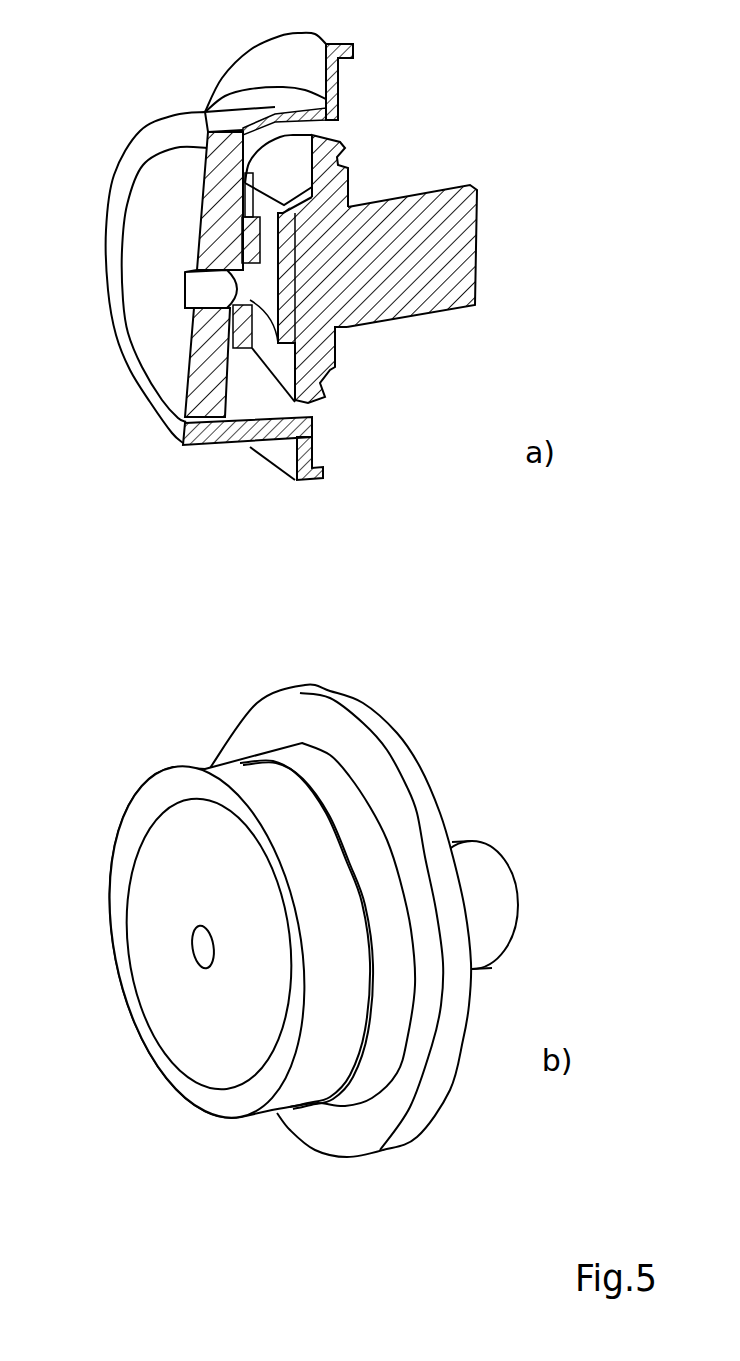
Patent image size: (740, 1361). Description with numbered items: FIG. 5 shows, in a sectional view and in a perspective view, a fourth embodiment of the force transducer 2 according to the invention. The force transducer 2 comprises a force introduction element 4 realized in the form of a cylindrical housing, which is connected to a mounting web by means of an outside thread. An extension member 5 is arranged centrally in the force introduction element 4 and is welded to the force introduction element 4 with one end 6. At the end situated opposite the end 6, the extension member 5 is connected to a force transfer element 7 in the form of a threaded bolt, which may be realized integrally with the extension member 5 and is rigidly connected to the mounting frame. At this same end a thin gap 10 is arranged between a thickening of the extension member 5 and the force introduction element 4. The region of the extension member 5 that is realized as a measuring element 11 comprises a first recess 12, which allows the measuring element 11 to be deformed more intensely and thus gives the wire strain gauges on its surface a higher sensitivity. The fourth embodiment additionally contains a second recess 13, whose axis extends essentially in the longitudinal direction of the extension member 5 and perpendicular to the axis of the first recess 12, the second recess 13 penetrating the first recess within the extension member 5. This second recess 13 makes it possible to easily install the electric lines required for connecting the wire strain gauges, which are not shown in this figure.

The force transducer 2 is at (430, 123).
The force introduction element 4 is at (253, 117).
The extension member 5 is at (207, 203).
The end 6 is at (143, 138).
The force transfer element 7 is at (463, 268).
The thin gap 10 is at (338, 127).
The measuring element 11 is at (340, 192).
The first recess 12 is at (340, 160).
The second recess 13 is at (192, 287).